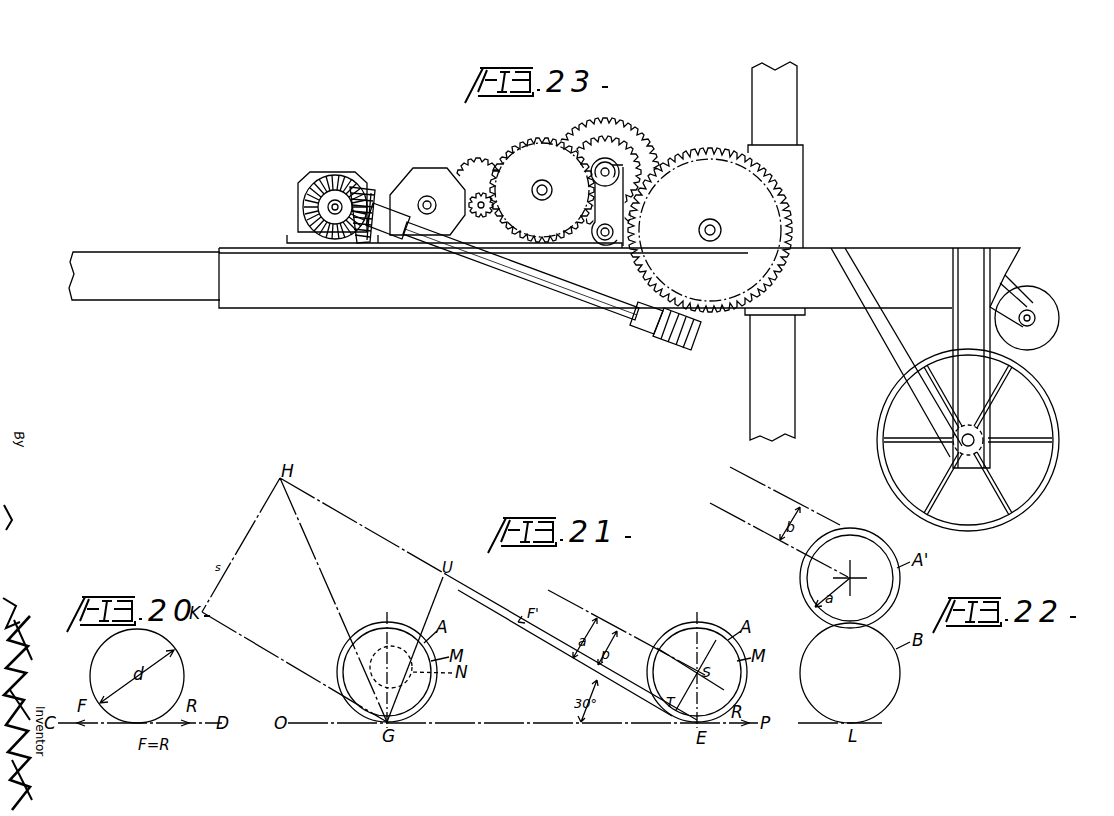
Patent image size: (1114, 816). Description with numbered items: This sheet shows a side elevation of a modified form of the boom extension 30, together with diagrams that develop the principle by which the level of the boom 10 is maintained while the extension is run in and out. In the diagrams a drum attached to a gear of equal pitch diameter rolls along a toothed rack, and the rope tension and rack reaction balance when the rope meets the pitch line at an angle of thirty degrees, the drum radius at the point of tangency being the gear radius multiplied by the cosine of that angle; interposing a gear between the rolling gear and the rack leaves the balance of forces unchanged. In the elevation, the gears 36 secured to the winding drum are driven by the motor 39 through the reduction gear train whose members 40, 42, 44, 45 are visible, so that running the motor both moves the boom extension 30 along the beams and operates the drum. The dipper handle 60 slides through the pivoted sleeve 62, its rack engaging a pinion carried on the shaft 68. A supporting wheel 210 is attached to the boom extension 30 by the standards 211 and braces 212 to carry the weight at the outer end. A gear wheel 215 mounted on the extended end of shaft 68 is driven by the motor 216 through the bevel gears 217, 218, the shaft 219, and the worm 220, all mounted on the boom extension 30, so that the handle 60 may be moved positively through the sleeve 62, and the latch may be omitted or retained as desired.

The boom 10 is at (195, 302).
The boom extension 30 is at (887, 262).
The gears 36 is at (625, 143).
The motor 39 is at (415, 178).
The reduction gear train member 40 is at (618, 124).
The reduction gear train member 42 is at (535, 133).
The reduction gear train member 44 is at (469, 163).
The reduction gear train member 45 is at (468, 202).
The dipper handle 60 is at (797, 410).
The sleeve 62 is at (800, 160).
The shaft 68 is at (719, 226).
The supporting wheel 210 is at (1053, 421).
The standards 211 is at (963, 332).
The braces 212 is at (885, 341).
The gear wheel 215 is at (752, 113).
The motor 216 is at (315, 178).
The bevel gear 217 is at (340, 186).
The bevel gear 218 is at (354, 243).
The shaft 219 is at (487, 263).
The worm 220 is at (668, 341).